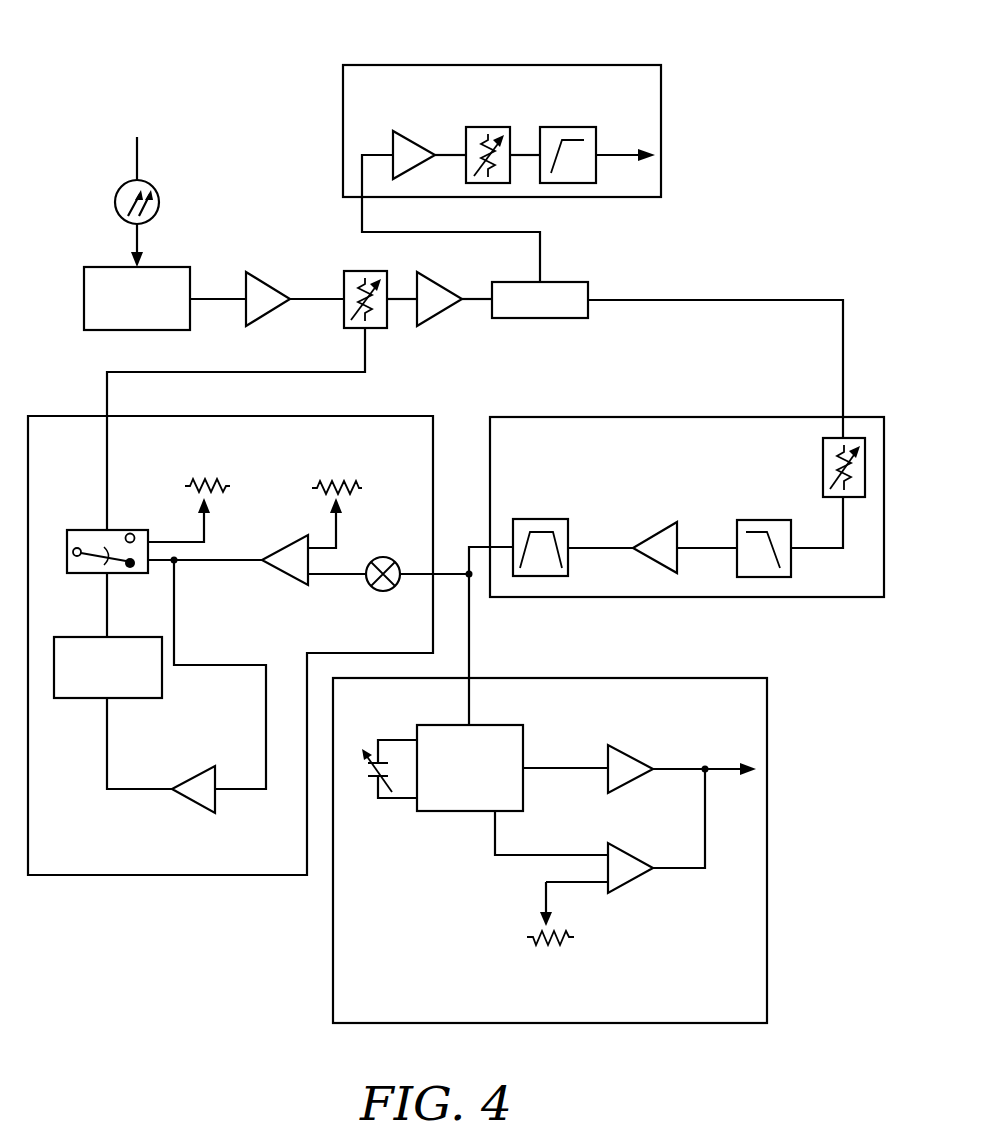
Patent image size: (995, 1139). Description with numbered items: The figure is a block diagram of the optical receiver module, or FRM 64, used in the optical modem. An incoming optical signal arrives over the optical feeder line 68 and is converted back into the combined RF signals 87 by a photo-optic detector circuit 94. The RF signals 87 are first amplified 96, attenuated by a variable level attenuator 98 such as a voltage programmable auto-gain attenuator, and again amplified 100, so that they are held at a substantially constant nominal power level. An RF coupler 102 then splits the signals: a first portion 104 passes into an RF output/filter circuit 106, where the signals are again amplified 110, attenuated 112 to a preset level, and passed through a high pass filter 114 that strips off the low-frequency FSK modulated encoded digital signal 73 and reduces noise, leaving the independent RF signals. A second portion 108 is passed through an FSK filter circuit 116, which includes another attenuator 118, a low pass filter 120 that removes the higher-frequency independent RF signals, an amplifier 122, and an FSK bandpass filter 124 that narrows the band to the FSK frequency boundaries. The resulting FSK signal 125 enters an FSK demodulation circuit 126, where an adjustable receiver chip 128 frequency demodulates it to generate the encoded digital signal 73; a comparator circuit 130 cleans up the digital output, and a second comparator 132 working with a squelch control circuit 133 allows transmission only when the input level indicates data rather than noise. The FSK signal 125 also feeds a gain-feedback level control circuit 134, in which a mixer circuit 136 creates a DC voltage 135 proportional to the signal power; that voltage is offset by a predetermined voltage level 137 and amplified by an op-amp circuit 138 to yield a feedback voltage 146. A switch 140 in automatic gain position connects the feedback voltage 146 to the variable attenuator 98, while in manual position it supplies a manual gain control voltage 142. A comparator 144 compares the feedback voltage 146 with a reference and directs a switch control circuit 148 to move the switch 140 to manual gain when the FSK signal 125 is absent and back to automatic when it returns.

The FRM 64 is at (219, 114).
The optical feeder line 68 is at (139, 160).
The photo-optic detector circuit 94 is at (168, 267).
The combined RF signals 87 is at (215, 297).
The amplifier 96 is at (268, 275).
The variable level attenuator 98 is at (355, 271).
The amplifier 100 is at (440, 275).
The RF coupler 102 is at (570, 282).
The first portion of the combined RF signals 104 is at (545, 250).
The RF output/filter circuit 106 is at (625, 65).
The amplifier 110 is at (397, 130).
The attenuator 112 is at (466, 140).
The high pass filter 114 is at (580, 127).
The second portion of the combined RF signals 108 is at (843, 355).
The FSK filter circuit 116 is at (650, 417).
The attenuator 118 is at (823, 458).
The 5 MHz low pass filter 120 is at (793, 563).
The amplifier 122 is at (648, 562).
The FSK bandpass filter 124 is at (538, 519).
The FSK signal 125 is at (469, 635).
The FSK demodulation circuit 126 is at (767, 940).
The adjustable receiver chip 128 is at (455, 813).
The comparator circuit 130 is at (660, 792).
The second comparator 132 is at (641, 880).
The squelch control circuit 133 is at (527, 938).
The encoded digital signal 73 is at (722, 772).
The level control circuit 134 is at (393, 416).
The DC voltage 135 is at (345, 572).
The mixer circuit 136 is at (388, 557).
The predetermined voltage level 137 is at (362, 486).
The op-amp circuit 138 is at (290, 545).
The switch 140 is at (95, 530).
The manual gain control voltage 142 is at (185, 485).
The comparator 144 is at (185, 807).
The feedback voltage 146 is at (215, 568).
The switch control circuit 148 is at (143, 700).